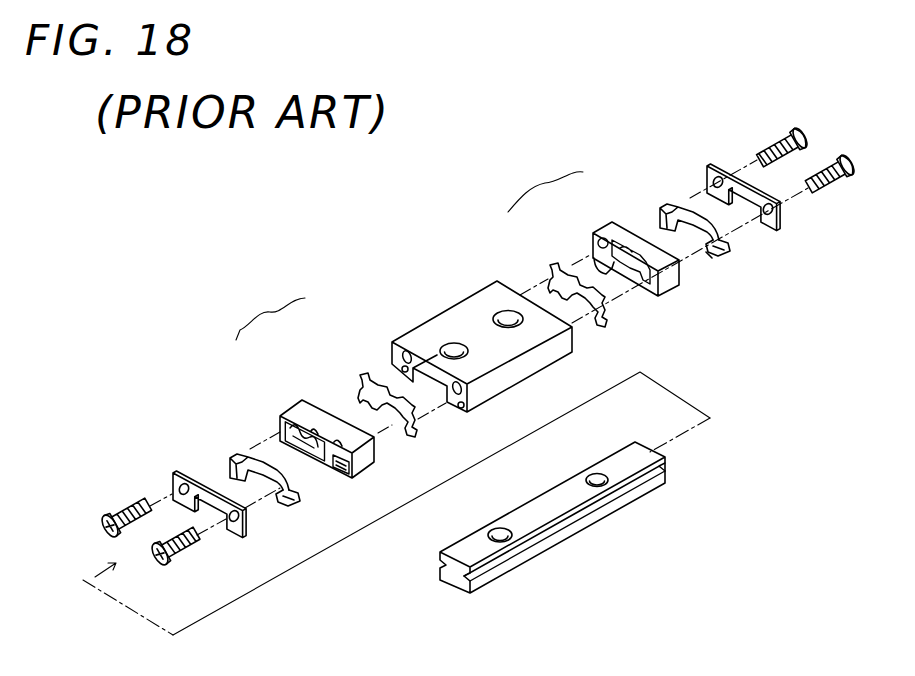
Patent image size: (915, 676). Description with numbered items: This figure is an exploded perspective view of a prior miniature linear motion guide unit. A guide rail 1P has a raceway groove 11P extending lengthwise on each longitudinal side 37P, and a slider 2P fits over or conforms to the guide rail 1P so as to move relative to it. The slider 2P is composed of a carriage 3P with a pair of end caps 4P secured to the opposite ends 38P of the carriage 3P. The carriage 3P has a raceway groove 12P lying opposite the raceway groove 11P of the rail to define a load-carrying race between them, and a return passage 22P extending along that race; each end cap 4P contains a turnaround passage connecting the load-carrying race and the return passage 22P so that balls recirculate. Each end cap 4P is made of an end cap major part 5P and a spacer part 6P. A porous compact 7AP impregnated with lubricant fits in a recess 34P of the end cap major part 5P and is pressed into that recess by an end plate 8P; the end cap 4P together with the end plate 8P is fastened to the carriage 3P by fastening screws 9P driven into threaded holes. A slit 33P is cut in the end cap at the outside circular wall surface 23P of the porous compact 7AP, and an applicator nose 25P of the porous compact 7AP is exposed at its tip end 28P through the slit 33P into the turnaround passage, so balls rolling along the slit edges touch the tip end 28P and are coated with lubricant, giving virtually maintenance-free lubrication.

The guide rail 1P is at (557, 507).
The slider 2P is at (443, 291).
The carriage 3P is at (475, 322).
The end cap 4P is at (409, 248).
The end cap major part 5P is at (300, 408).
The spacer part 6P is at (366, 379).
The porous compact 7AP is at (250, 457).
The end plate 8P is at (193, 476).
The fastening screw 9P is at (106, 515).
The raceway groove 11P is at (633, 483).
The raceway groove 12P is at (448, 397).
The return passage 22P is at (402, 360).
The outside circular wall surface 23P is at (644, 291).
The applicator nose 25P is at (296, 498).
The tip end 28P is at (713, 256).
The slit 33P is at (335, 456).
The recess 34P is at (357, 450).
The longitudinal side 37P is at (590, 518).
The opposite ends 38P is at (423, 362).